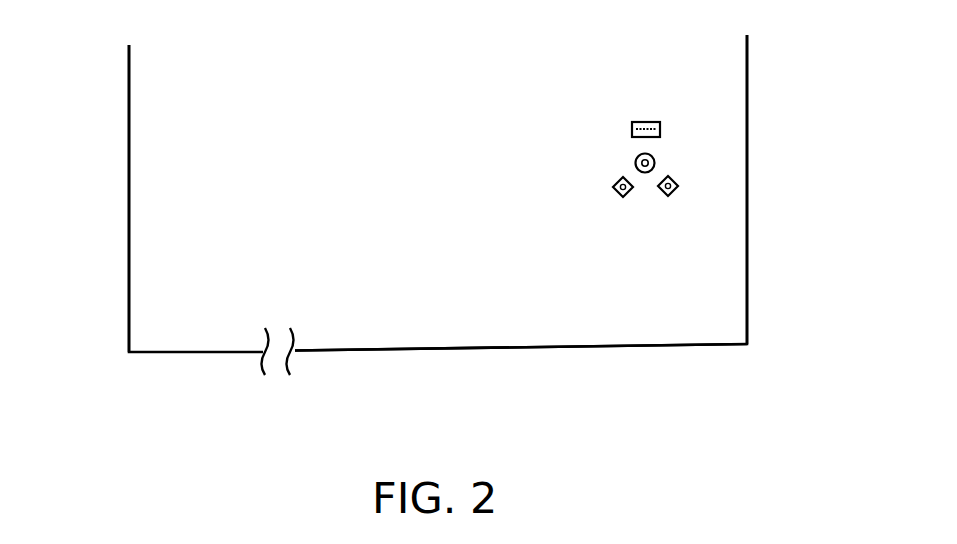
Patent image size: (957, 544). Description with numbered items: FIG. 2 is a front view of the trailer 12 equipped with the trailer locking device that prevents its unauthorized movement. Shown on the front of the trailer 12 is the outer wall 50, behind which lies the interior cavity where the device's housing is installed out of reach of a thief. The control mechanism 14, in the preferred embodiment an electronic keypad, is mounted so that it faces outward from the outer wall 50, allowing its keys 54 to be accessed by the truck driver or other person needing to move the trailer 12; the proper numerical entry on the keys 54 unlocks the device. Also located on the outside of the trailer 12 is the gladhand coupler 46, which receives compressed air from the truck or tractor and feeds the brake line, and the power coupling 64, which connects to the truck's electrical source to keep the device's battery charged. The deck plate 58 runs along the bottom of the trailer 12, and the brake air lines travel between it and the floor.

The trailer 12 is at (173, 131).
The control mechanism 14 is at (653, 121).
The gladhand coupler 46 is at (632, 191).
The outer wall 50 is at (178, 225).
The keys 54 is at (660, 128).
The deck plate 58 is at (517, 348).
The power coupling 64 is at (655, 163).